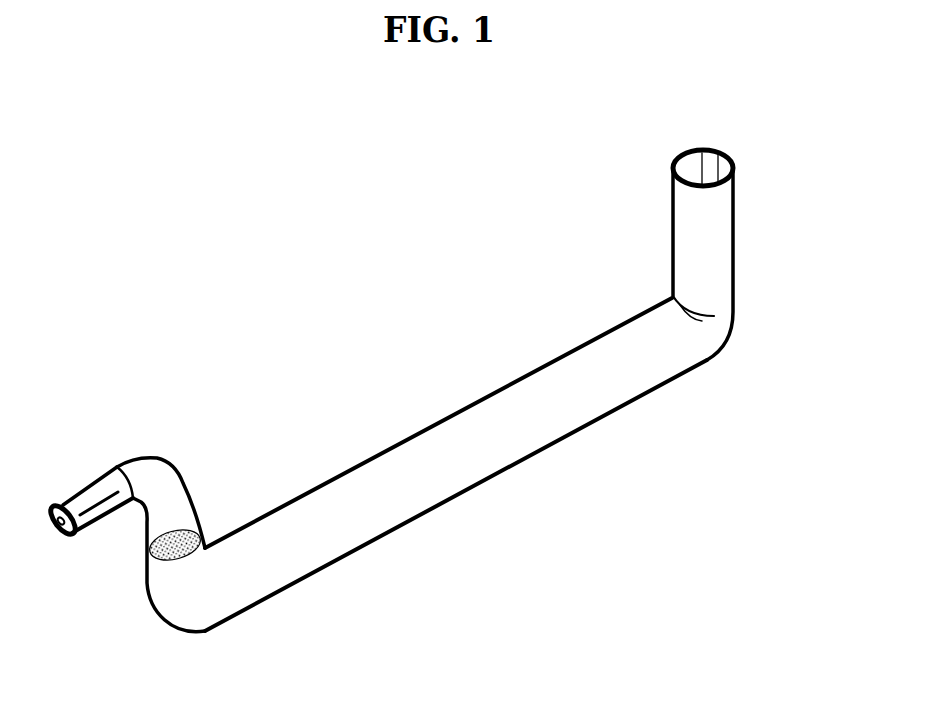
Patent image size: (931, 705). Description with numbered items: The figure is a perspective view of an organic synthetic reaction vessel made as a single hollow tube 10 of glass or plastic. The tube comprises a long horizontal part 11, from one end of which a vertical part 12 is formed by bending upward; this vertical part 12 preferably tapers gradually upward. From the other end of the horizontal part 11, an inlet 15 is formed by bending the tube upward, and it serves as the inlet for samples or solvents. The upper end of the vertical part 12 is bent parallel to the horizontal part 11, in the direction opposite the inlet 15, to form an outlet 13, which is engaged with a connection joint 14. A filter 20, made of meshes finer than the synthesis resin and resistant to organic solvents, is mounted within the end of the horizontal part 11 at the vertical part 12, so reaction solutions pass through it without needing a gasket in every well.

The hollow tube 10 is at (436, 412).
The horizontal part 11 is at (478, 440).
The vertical part 12 is at (176, 503).
The outlet 13 is at (154, 470).
The connection joint 14 is at (82, 496).
The inlet 15 is at (712, 230).
The filter 20 is at (156, 548).